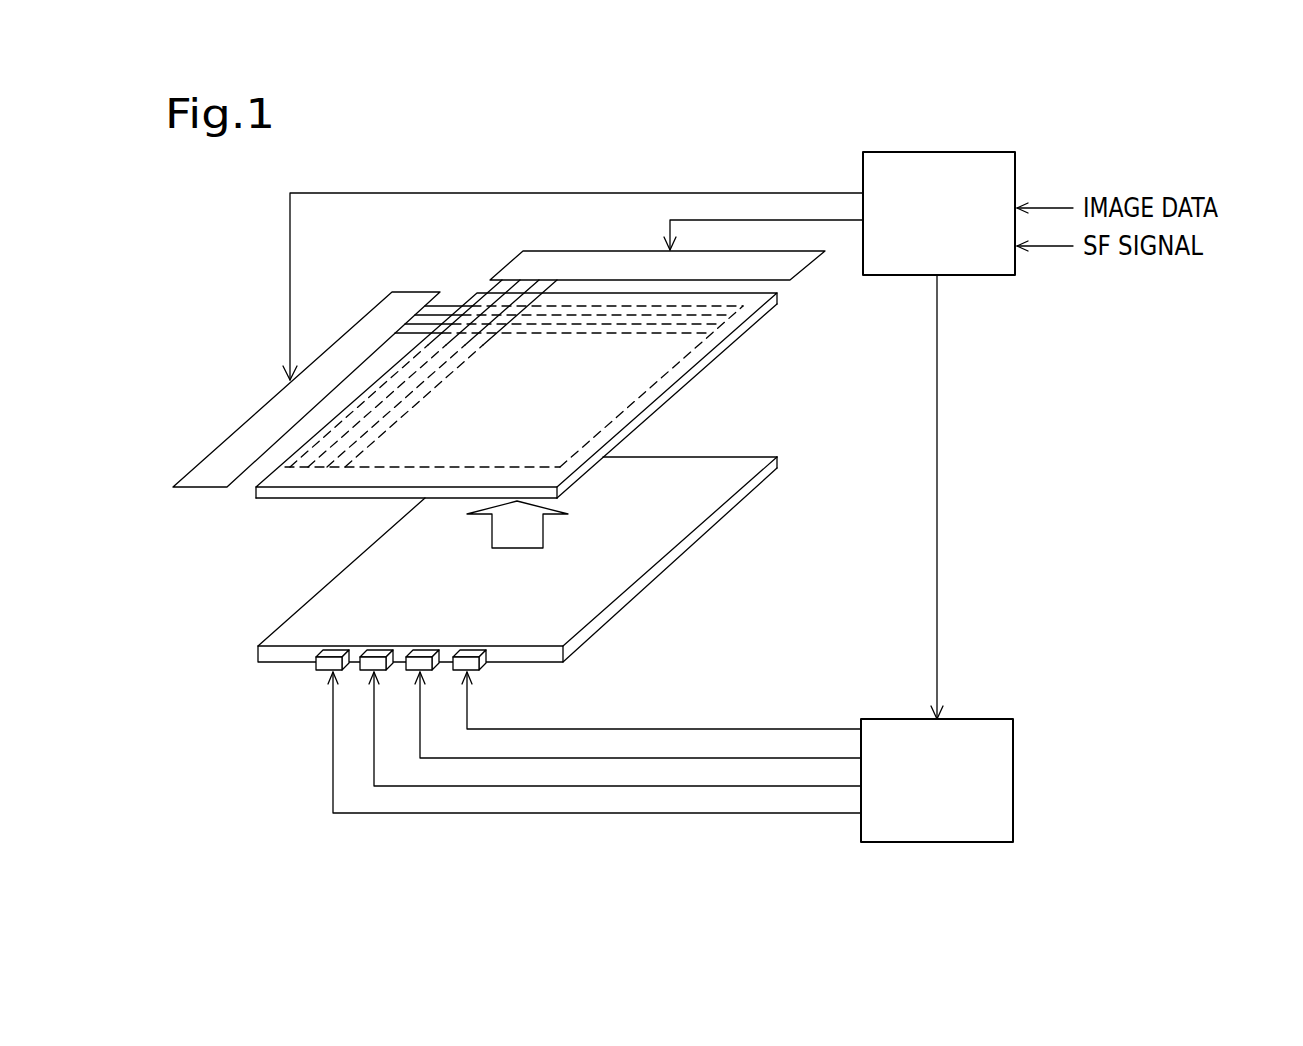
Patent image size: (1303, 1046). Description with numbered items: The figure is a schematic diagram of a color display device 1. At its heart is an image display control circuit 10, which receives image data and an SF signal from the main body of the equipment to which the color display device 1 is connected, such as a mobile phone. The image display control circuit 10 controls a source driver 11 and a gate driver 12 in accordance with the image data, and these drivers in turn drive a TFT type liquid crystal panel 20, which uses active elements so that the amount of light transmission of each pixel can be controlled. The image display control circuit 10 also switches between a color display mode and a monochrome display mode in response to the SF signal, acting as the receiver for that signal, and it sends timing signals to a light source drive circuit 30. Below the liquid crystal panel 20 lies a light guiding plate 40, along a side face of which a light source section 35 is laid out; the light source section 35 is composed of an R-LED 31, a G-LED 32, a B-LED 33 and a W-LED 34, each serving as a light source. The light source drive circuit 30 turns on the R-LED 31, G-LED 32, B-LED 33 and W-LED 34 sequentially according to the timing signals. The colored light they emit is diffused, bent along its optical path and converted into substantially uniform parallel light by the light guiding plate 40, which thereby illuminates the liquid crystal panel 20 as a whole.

The color display device 1 is at (607, 162).
The image display control circuit 10 is at (950, 153).
The source driver 11 is at (800, 263).
The gate driver 12 is at (237, 435).
The TFT type liquid crystal panel 20 is at (720, 352).
The light source drive circuit 30 is at (1013, 745).
The R-LED 31 is at (318, 672).
The G-LED 32 is at (362, 672).
The B-LED 33 is at (409, 672).
The W-LED 34 is at (457, 672).
The light source section 35 is at (381, 791).
The light guiding plate 40 is at (683, 545).